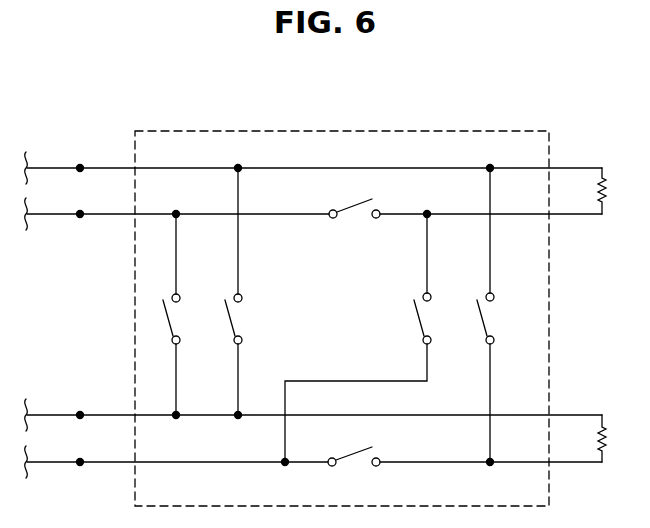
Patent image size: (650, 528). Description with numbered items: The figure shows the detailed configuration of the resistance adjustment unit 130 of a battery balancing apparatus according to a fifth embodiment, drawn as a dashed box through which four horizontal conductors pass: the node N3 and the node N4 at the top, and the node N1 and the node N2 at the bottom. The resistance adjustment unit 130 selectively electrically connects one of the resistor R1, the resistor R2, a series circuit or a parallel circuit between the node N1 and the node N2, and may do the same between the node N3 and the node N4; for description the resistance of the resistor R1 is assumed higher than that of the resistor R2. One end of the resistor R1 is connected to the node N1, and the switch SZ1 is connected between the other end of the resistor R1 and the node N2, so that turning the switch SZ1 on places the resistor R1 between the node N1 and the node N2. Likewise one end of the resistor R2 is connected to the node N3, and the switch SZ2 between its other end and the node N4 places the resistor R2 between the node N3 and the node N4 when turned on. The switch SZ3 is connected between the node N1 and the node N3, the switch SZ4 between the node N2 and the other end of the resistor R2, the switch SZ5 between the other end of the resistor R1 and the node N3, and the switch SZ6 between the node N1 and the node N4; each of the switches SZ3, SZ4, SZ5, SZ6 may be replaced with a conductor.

The resistance adjustment unit 130 is at (473, 131).
The node N1 is at (80, 412).
The node N2 is at (80, 459).
The node N3 is at (80, 165).
The node N4 is at (80, 211).
The switch SZ1 is at (354, 468).
The switch SZ2 is at (354, 220).
The switch SZ3 is at (245, 291).
The switch SZ4 is at (370, 338).
The switch SZ5 is at (497, 315).
The switch SZ6 is at (183, 314).
The resistor R1 is at (612, 438).
The resistor R2 is at (612, 191).